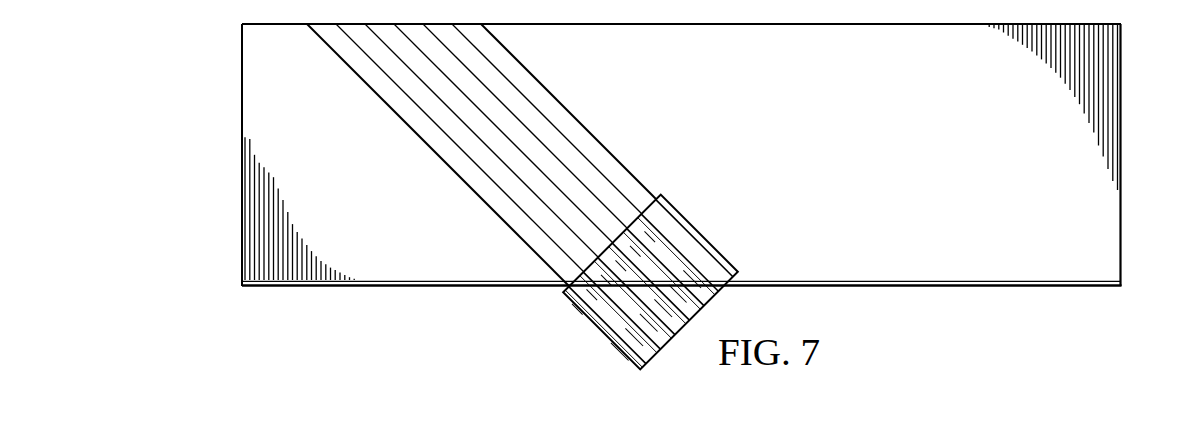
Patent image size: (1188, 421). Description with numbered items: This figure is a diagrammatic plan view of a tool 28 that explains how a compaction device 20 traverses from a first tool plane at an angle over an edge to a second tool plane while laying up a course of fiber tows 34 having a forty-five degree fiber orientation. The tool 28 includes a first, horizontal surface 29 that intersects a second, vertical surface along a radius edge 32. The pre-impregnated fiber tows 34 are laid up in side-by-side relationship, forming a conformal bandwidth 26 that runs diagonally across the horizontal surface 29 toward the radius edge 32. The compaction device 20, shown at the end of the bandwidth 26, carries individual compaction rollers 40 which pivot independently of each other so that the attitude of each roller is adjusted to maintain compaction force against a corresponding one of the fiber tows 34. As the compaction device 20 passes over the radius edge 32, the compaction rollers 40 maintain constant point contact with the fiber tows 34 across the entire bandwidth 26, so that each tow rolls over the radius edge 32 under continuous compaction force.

The compaction device 20 is at (539, 197).
The conformal bandwidth 26 is at (481, 155).
The tool 28 is at (1121, 178).
The horizontal surface 29 is at (262, 117).
The radius edge 32 is at (908, 281).
The fiber tows 34 is at (480, 183).
The compaction rollers 40 is at (674, 207).